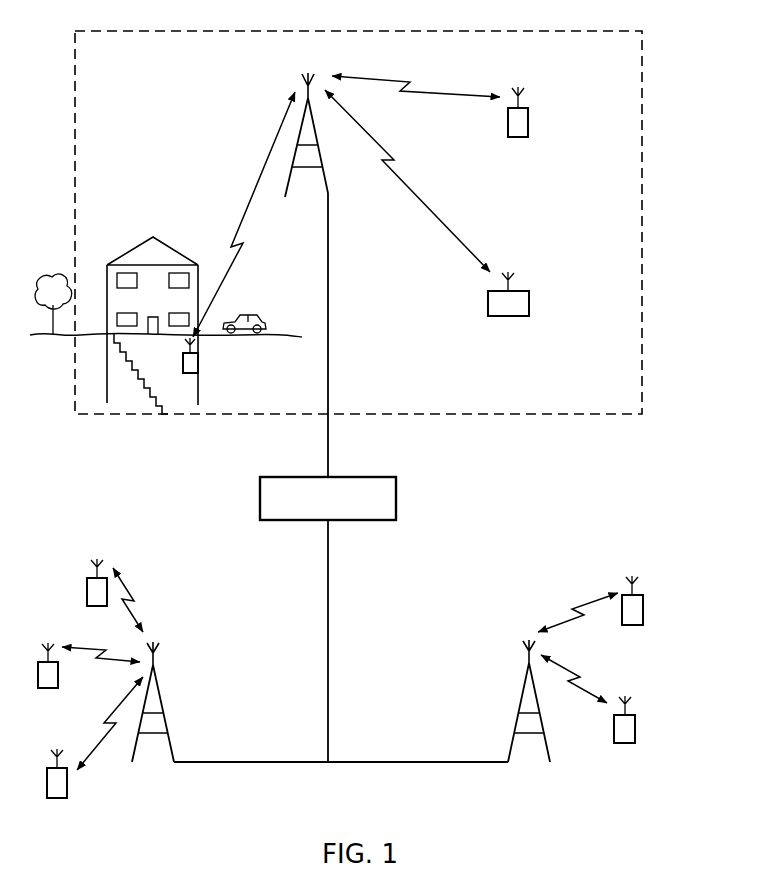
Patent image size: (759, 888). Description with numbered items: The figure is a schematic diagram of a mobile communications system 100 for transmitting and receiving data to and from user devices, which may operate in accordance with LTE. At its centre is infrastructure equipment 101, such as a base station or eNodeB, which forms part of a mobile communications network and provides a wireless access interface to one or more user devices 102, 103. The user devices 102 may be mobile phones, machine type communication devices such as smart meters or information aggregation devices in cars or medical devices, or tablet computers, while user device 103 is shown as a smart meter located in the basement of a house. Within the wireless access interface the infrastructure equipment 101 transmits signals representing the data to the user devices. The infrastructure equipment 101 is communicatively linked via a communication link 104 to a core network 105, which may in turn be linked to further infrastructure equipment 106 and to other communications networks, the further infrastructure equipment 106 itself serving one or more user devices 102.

The mobile communications system 100 is at (645, 136).
The infrastructure equipment 101 is at (323, 177).
The user devices 102 is at (528, 121).
The user device 103 is at (199, 365).
The communication link 104 is at (329, 378).
The core network 105 is at (397, 500).
The further infrastructure equipment 106 is at (165, 700).